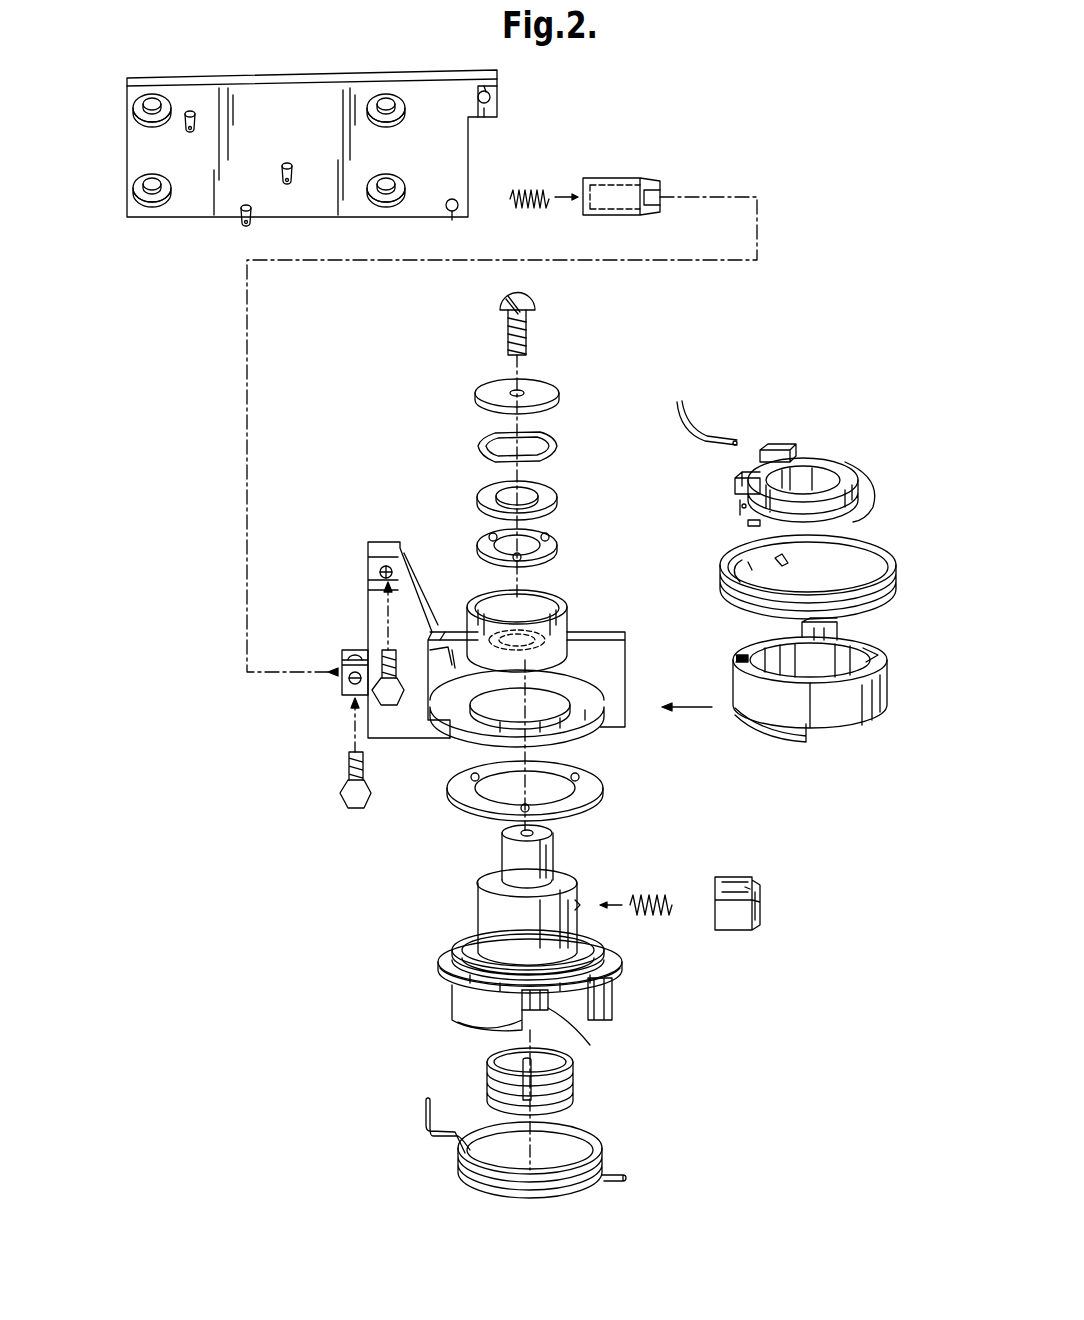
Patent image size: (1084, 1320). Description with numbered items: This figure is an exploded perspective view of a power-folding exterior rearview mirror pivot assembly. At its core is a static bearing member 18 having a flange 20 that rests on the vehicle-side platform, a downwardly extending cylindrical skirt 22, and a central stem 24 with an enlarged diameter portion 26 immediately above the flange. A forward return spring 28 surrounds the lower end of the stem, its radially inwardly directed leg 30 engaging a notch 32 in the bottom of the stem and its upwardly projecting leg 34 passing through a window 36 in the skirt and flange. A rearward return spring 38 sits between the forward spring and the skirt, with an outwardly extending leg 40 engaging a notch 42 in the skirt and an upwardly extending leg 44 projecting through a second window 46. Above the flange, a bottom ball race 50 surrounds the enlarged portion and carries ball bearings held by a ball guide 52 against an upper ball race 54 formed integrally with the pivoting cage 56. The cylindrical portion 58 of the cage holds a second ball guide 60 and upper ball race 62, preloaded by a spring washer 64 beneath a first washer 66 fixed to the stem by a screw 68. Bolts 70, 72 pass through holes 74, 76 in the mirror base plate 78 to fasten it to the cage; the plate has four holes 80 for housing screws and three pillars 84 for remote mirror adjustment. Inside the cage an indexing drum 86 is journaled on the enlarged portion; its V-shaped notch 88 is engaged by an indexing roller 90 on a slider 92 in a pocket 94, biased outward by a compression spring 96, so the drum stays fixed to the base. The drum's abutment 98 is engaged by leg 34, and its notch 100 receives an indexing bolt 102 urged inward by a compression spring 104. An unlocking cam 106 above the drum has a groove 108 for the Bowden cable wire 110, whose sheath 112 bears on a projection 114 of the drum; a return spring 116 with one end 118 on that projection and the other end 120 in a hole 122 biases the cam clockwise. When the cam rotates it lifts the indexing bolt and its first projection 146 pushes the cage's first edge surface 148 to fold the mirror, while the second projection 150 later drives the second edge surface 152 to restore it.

The static bearing member 18 is at (432, 976).
The flange 20 is at (620, 978).
The cylindrical skirt 22 is at (452, 1000).
The central stem 24 is at (552, 848).
The enlarged diameter portion 26 is at (478, 912).
The forward return spring 28 is at (490, 1064).
The radially inwardly directed leg 30 is at (565, 1108).
The notch 32 is at (575, 1030).
The upwardly projecting leg 34 is at (560, 1082).
The window 36 is at (522, 1018).
The rearward return spring 38 is at (460, 1182).
The radially outwardly extending leg 40 is at (623, 1177).
The notch 42 is at (612, 1018).
The upwardly extending leg 44 is at (426, 1108).
The second window 46 is at (455, 950).
The bottom ball race 50 is at (598, 950).
The ball guide 52 is at (598, 796).
The upper ball race 54 is at (590, 737).
The pivoting cage 56 is at (625, 665).
The cylindrical portion 58 is at (565, 618).
The second ball guide 60 is at (556, 548).
The upper ball race 62 is at (552, 500).
The spring washer 64 is at (556, 444).
The first washer 66 is at (556, 392).
The screw 68 is at (536, 305).
The bolt 70 is at (392, 697).
The bolt 72 is at (352, 796).
The hole 74 is at (491, 96).
The hole 76 is at (454, 212).
The mirror base plate 78 is at (196, 212).
The holes 80 is at (155, 103).
The pillars 84 is at (247, 205).
The indexing drum 86 is at (872, 712).
The V-shaped notch 88 is at (876, 652).
The indexing roller 90 is at (760, 903).
The slider 92 is at (738, 880).
The pocket 94 is at (580, 905).
The compression spring 96 is at (655, 912).
The abutment 98 is at (806, 737).
The notch 100 is at (734, 658).
The indexing bolt 102 is at (612, 182).
The compression spring 104 is at (528, 188).
The unlocking cam 106 is at (812, 476).
The groove 108 is at (850, 500).
The wire 110 is at (866, 486).
The sheath 112 is at (688, 420).
The projection 114 is at (798, 634).
The return spring 116 is at (885, 595).
The end 118 is at (788, 565).
The end 120 is at (738, 582).
The hole 122 is at (740, 508).
The first projection 146 is at (776, 448).
The first edge surface 148 is at (460, 632).
The second projection 150 is at (735, 478).
The second edge surface 152 is at (455, 648).